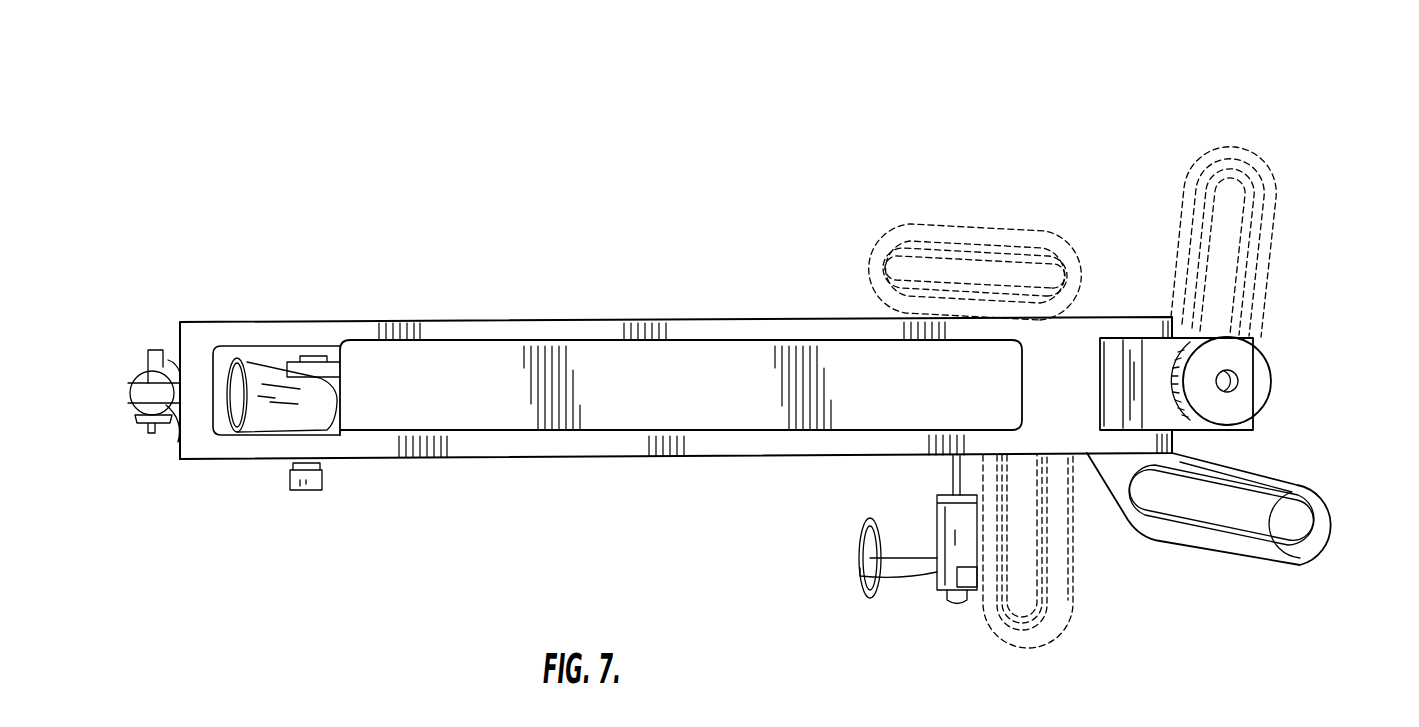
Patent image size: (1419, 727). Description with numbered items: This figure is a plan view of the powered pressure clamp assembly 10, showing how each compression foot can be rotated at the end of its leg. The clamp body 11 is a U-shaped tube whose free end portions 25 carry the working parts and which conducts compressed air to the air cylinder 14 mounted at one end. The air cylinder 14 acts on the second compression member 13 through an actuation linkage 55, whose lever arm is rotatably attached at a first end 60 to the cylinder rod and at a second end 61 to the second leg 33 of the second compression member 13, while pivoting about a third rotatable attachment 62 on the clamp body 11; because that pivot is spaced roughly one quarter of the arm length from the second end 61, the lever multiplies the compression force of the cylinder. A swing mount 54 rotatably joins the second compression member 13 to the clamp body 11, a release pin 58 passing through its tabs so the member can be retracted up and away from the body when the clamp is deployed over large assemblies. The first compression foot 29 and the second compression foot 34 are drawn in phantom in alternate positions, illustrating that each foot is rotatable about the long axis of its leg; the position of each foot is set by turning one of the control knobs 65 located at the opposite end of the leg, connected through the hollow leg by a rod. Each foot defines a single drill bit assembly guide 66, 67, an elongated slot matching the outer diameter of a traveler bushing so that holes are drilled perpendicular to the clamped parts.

The pressure clamp assembly 10 is at (720, 168).
The clamp body 11 is at (430, 357).
The second compression member 13 is at (1258, 372).
The air cylinder 14 is at (270, 410).
The free end portions 25 is at (777, 403).
The first compression foot 29 is at (1285, 478).
The second leg 33 is at (1254, 418).
The second compression foot 34 is at (1320, 549).
The swing mount 54 is at (553, 459).
The actuation linkage 55 is at (595, 324).
The release pin 58 is at (957, 604).
The first end 60 is at (153, 388).
The second end 61 is at (1142, 322).
The third rotatable attachment 62 is at (945, 332).
The control knobs 65 is at (1278, 353).
The drill bit assembly guide 66 is at (1263, 532).
The drill bit assembly guide 67 is at (1318, 517).